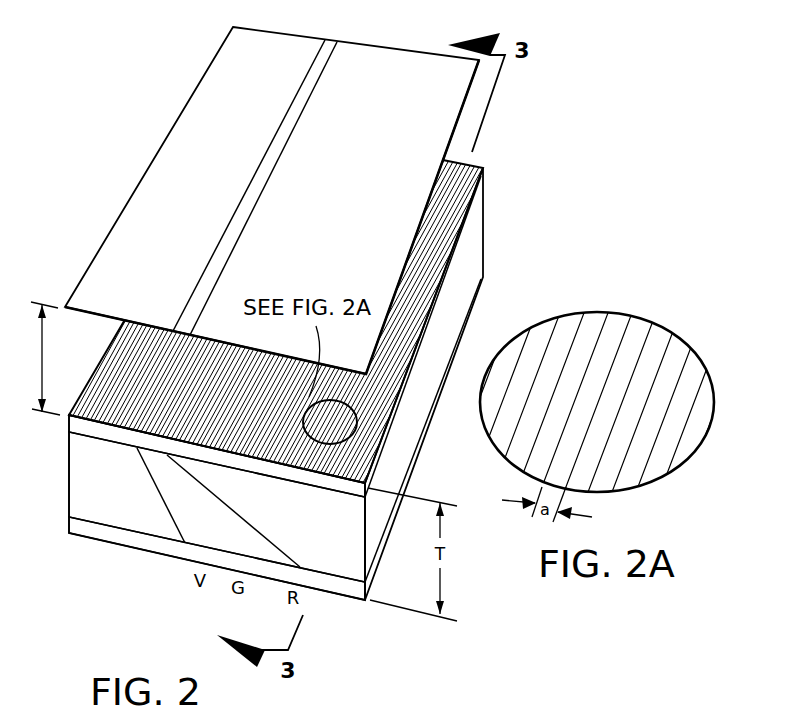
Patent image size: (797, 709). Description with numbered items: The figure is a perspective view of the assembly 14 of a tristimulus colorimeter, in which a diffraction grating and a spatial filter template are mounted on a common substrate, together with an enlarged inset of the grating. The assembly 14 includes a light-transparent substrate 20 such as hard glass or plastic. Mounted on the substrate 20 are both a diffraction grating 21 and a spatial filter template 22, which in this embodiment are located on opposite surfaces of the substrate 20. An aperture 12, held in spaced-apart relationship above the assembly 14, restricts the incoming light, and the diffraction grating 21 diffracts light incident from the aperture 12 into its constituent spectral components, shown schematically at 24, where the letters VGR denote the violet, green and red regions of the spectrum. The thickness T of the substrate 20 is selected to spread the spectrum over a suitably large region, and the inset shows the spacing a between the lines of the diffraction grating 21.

The aperture 12 is at (337, 40).
The assembly 14 is at (512, 262).
The diffraction grating 21 is at (80, 430).
The light-transparent substrate 20 is at (69, 483).
The spatial filter template 22 is at (69, 527).
The constituent spectral components 24 is at (270, 540).